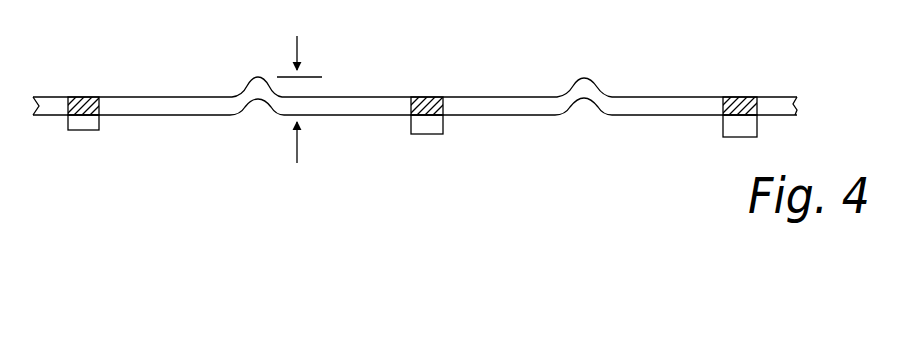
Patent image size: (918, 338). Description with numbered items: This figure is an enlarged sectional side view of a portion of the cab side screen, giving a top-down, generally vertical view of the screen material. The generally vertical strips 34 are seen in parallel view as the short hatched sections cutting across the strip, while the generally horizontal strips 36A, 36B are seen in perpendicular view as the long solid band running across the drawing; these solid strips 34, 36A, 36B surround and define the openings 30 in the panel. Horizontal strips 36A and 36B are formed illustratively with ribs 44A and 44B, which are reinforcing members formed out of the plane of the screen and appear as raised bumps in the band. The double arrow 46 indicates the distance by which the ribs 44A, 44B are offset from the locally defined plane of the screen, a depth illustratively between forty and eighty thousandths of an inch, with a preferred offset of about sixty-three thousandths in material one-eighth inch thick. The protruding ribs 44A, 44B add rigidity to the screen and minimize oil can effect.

The opening 30 is at (200, 120).
The vertical strip 34 is at (97, 108).
The horizontal strip 36A is at (482, 107).
The horizontal strip 36B is at (320, 107).
The rib 44A is at (601, 82).
The rib 44B is at (235, 95).
The double arrow 46 is at (300, 36).